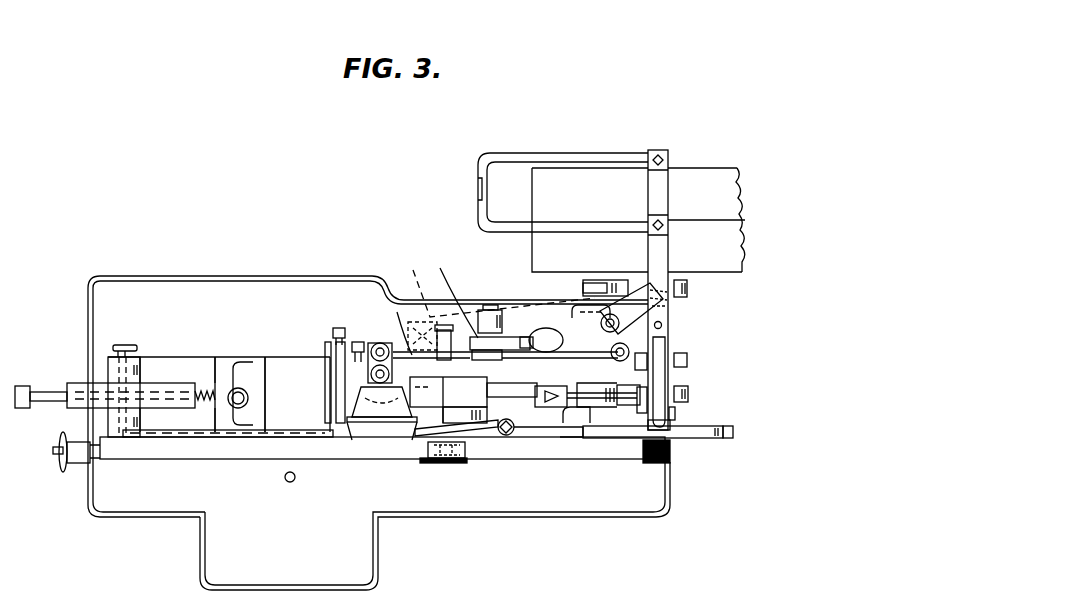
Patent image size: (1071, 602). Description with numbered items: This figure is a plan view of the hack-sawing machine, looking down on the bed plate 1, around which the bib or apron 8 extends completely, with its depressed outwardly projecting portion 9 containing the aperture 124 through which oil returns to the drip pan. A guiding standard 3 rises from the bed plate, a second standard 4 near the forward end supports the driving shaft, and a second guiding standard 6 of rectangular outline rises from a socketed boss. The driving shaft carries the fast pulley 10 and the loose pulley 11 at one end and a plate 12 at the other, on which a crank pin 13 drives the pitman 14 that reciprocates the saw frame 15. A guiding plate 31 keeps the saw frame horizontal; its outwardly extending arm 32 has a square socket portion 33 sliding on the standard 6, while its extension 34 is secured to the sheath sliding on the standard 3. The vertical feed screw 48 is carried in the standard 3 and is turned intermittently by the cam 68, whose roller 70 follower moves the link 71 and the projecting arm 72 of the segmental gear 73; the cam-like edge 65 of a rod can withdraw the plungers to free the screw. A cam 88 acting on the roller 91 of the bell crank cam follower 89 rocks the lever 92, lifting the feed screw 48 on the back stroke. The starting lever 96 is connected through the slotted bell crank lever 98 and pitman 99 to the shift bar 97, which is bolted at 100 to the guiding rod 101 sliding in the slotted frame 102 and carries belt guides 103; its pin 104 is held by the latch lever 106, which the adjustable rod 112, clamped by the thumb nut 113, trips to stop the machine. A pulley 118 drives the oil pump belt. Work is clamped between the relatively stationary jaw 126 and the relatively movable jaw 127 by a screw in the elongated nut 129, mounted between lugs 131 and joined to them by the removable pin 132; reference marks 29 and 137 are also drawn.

The bed plate 1 is at (197, 357).
The guiding standard 3 is at (355, 425).
The second standard 4 is at (577, 424).
The second guiding standard 6 is at (506, 437).
The bib or apron 8 is at (290, 282).
The depressed outwardly projecting portion 9 is at (217, 532).
The fast pulley 10 is at (708, 235).
The loose pulley 11 is at (688, 175).
The plate 12 is at (718, 440).
The crank pin 13 is at (668, 465).
The pitman 14 is at (563, 458).
The saw frame 15 is at (272, 455).
The handwheel 29 is at (78, 465).
The guiding plate 31 is at (310, 402).
The outwardly extending arm 32 is at (498, 433).
The square socket portion 33 is at (512, 433).
The upwardly projecting extension 34 is at (406, 425).
The vertical feed screw 48 is at (395, 378).
The cam-like edge 65 is at (370, 375).
The cam 68 is at (688, 290).
The roller 70 is at (585, 290).
The link 71 is at (418, 278).
The projecting arm 72 is at (425, 295).
The segmental gear 73 is at (448, 396).
The cam 88 is at (689, 395).
The bell crank cam follower 89 is at (566, 367).
The roller 91 is at (602, 384).
The lever 92 is at (528, 405).
The starting lever 96 is at (450, 297).
The shift bar 97 is at (666, 258).
The slotted bell crank lever 98 is at (634, 285).
The pitman 99 is at (585, 352).
The bolt 100 is at (662, 325).
The guiding rod 101 is at (665, 378).
The slotted frame 102 is at (670, 417).
The belt guides 103 is at (598, 160).
The pin 104 is at (540, 360).
The latch lever 106 is at (392, 329).
The rod 112 is at (362, 330).
The thumb nut 113 is at (356, 340).
The pulley 118 is at (688, 357).
The aperture 124 is at (292, 483).
The relatively stationary jaw 126 is at (336, 380).
The relatively movable jaw 127 is at (235, 400).
The elongated nut 129 is at (178, 410).
The lugs 131 is at (110, 365).
The removable pin 132 is at (126, 345).
The post 137 is at (325, 365).